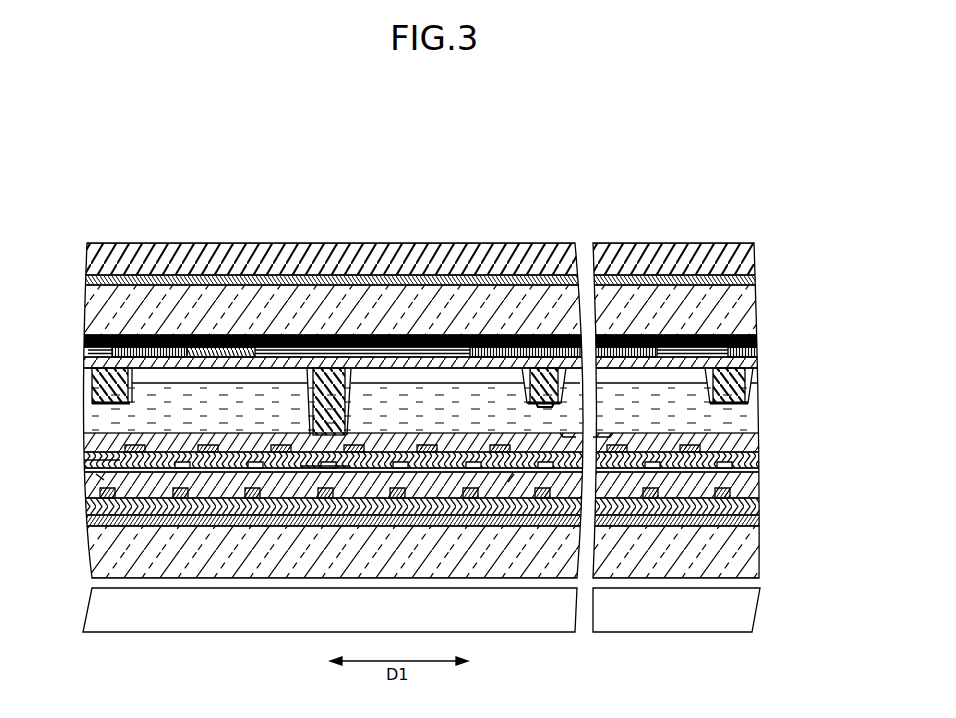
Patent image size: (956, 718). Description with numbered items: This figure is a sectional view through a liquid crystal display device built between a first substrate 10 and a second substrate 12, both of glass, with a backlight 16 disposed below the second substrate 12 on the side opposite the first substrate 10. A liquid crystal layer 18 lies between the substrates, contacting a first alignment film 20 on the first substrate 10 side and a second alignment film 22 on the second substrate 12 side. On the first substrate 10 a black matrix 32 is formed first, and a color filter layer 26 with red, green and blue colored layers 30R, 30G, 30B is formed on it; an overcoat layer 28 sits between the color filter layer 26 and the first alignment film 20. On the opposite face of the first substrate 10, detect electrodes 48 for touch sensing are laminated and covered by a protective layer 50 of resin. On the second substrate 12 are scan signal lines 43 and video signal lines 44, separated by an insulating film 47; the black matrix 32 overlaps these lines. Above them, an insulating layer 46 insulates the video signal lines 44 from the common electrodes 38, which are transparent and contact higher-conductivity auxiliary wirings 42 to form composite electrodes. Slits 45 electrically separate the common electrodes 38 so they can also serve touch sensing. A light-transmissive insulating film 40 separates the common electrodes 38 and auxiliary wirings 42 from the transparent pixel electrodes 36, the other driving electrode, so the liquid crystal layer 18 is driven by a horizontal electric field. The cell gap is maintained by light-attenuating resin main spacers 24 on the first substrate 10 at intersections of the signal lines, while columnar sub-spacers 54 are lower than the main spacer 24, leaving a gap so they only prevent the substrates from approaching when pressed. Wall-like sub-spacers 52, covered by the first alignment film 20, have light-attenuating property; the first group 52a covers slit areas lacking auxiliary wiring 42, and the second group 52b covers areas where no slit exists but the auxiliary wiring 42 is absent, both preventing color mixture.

The first substrate 10 is at (750, 312).
The second substrate 12 is at (750, 553).
The backlight 16 is at (750, 604).
The liquid crystal layer 18 is at (745, 422).
The first alignment film 20 is at (759, 374).
The second alignment film 22 is at (748, 443).
The main spacer 24 is at (330, 438).
The color filter layer 26 is at (768, 356).
The overcoat layer 28 is at (92, 358).
The colored layer (blue) 30B is at (289, 348).
The colored layer (red) 30R is at (367, 350).
The colored layer (green) 30G is at (431, 348).
The black matrix 32 is at (752, 341).
The pixel electrode 36 is at (436, 443).
The common electrode 38 is at (96, 474).
The insulating film 40 is at (745, 462).
The auxiliary wiring 42 is at (471, 468).
The scan signal line 43 is at (748, 522).
The video signal line 44 is at (256, 500).
The slit 45 is at (97, 465).
The insulating layer 46 is at (742, 492).
The insulating film 47 is at (750, 507).
The detect electrode 48 is at (748, 282).
The protective layer 50 is at (744, 262).
The wall-like sub-spacer 52 is at (578, 449).
The first group of wall-like sub-spacers 52a is at (111, 402).
The second group of wall-like sub-spacers 52b is at (545, 406).
The sub-spacer 54 is at (107, 379).